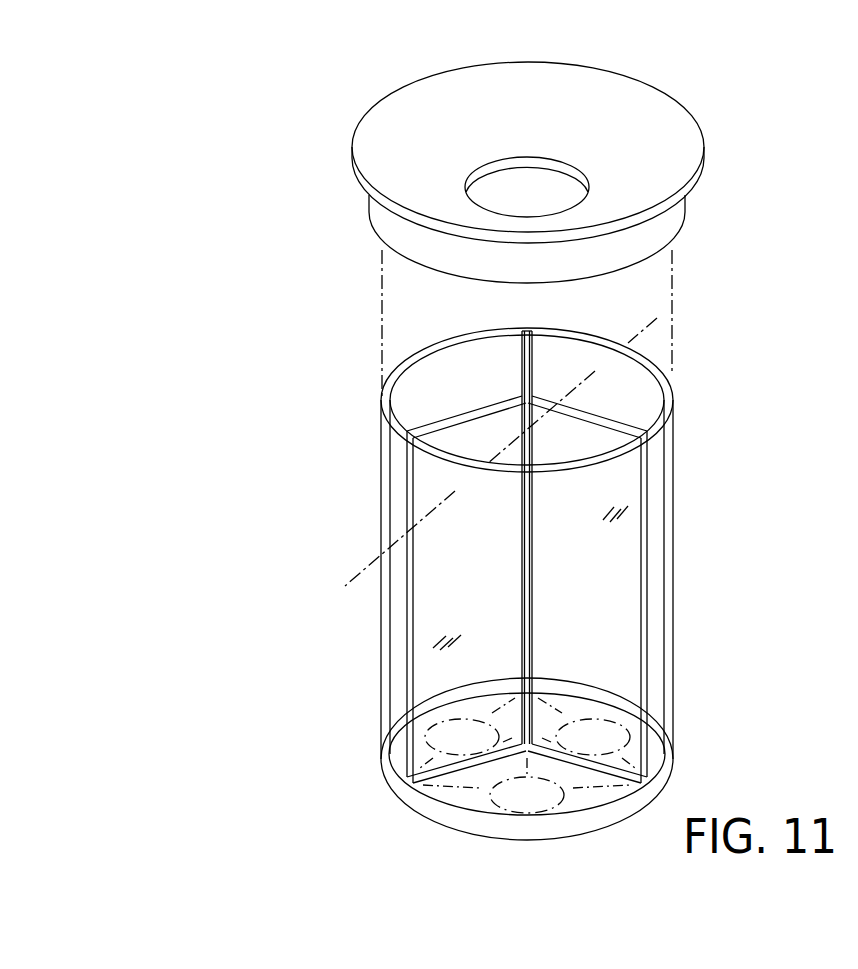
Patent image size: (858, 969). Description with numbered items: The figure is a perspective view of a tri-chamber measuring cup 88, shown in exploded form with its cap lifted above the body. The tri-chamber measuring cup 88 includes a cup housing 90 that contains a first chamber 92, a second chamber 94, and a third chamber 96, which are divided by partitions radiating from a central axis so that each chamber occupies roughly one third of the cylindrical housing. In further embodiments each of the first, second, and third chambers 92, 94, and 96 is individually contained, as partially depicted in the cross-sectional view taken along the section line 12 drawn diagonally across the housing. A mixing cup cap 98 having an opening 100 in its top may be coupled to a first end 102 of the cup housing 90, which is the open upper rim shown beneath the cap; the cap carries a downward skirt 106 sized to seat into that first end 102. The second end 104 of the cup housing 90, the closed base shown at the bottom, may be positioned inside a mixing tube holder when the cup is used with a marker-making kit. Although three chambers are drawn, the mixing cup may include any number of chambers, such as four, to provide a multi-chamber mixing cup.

The tri-chamber measuring cup 88 is at (266, 125).
The cup housing 90 is at (381, 662).
The first chamber 92 is at (559, 431).
The second chamber 94 is at (568, 349).
The third chamber 96 is at (454, 361).
The mixing cup cap 98 is at (651, 97).
The opening 100 is at (535, 169).
The first end 102 is at (372, 388).
The second end 104 is at (380, 800).
The lid skirt 106 is at (461, 290).
The section line 12- 12 is at (655, 327).